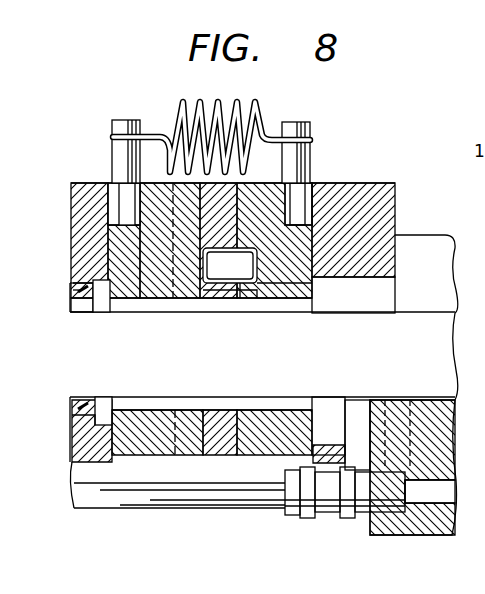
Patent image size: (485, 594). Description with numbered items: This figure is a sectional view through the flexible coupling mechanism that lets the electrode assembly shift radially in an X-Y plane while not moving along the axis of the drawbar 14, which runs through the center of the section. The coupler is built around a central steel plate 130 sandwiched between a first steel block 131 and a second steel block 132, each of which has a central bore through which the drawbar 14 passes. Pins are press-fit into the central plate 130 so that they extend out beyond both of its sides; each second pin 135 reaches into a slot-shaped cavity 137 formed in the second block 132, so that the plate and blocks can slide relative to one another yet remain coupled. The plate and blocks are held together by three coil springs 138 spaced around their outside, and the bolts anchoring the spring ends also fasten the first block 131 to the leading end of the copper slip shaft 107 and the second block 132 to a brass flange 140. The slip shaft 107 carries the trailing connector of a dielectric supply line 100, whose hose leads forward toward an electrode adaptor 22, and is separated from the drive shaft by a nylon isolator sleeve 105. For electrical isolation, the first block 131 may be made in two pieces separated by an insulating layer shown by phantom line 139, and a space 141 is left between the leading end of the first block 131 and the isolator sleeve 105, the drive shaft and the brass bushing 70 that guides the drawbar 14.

The drawbar 14 is at (292, 381).
The electrode adaptor 22 is at (418, 235).
The bushing 70 is at (84, 312).
The dielectric supply line 100 is at (262, 520).
The isolator sleeve 105 is at (75, 290).
The slip shaft 107 is at (93, 183).
The central plate 130 is at (218, 440).
The first block 131 is at (135, 440).
The second block 132 is at (278, 183).
The second pin 135 is at (228, 270).
The slot-shaped cavity 137 is at (250, 300).
The coil spring 138 is at (258, 108).
The phantom line 139 is at (178, 440).
The brass flange 140 is at (358, 183).
The space 141 is at (103, 300).